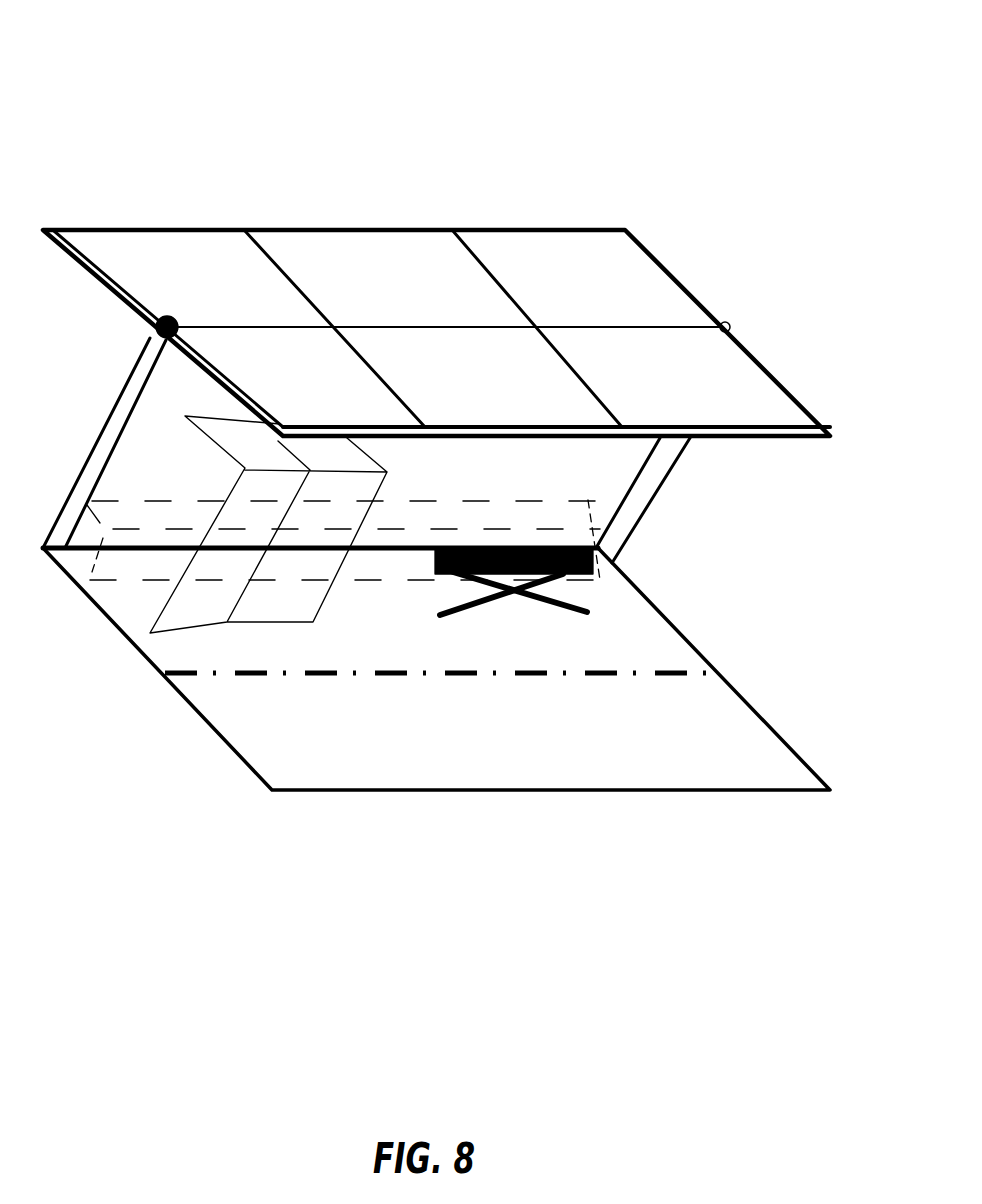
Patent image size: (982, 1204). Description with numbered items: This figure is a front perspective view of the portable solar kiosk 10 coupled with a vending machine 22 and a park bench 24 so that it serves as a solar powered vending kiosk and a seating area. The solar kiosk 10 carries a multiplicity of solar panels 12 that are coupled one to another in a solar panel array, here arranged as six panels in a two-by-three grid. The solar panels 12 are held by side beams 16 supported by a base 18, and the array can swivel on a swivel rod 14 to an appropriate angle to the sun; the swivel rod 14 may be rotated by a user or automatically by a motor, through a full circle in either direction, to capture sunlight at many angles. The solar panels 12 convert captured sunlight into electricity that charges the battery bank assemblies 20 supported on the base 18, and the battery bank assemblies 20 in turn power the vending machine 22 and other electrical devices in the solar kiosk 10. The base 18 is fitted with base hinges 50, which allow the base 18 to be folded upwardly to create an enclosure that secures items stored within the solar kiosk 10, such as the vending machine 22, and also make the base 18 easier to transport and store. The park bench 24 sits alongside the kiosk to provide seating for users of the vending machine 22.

The solar kiosk 10 is at (604, 92).
The solar panels 12 is at (172, 243).
The swivel rod 14 is at (152, 322).
The side beams 16 is at (118, 408).
The base 18 is at (732, 725).
The battery bank assemblies 20 is at (492, 535).
The vending machine 22 is at (132, 595).
The park bench 24 is at (577, 602).
The base hinges 50 is at (660, 673).